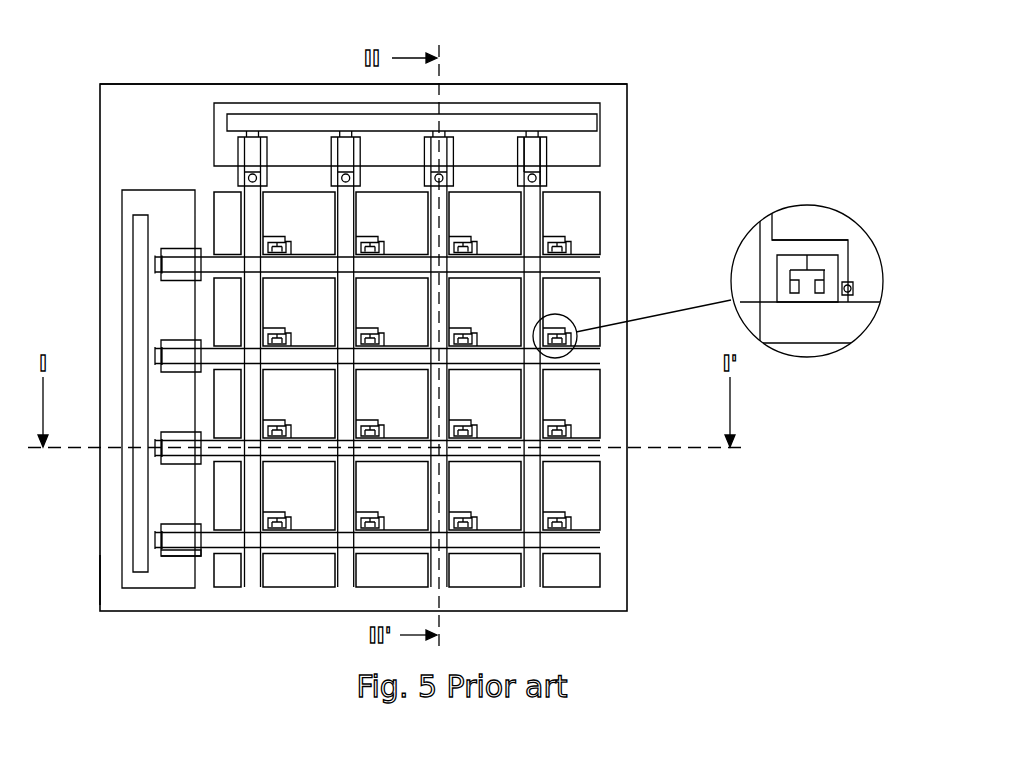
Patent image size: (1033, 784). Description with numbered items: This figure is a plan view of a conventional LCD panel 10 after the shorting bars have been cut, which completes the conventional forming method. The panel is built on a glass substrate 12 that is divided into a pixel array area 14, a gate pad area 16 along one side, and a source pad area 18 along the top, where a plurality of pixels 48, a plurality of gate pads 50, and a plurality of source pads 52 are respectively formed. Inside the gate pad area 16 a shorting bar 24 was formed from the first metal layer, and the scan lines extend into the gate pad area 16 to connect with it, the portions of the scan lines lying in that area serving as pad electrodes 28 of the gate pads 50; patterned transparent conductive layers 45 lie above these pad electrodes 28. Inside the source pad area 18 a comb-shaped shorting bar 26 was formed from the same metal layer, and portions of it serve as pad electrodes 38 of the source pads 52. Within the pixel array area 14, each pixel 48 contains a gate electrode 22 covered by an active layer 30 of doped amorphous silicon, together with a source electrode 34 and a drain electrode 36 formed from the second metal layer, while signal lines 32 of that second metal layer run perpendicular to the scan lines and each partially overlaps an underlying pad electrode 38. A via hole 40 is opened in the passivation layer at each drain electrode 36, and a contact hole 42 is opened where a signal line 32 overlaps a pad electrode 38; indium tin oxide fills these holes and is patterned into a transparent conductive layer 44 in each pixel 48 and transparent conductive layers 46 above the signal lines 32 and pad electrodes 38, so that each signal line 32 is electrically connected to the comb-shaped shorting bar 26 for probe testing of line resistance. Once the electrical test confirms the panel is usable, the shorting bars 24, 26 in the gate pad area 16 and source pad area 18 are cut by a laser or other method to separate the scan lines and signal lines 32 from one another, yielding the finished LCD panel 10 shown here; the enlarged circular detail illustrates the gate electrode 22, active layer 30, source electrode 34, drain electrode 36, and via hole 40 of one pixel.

The LCD panel 10 is at (548, 37).
The glass substrate 12 is at (630, 411).
The pixel array area 14 is at (600, 567).
The gate pad area 16 is at (107, 567).
The source pad area 18 is at (242, 104).
The gate electrode 22 is at (816, 254).
The shorting bar 24 is at (145, 390).
The comb-shaped shorting bar 26 is at (483, 116).
The pad electrode 28 is at (178, 538).
The active layer 30 is at (789, 250).
The signal line 32 is at (258, 577).
The source electrode 34 is at (790, 287).
The drain electrode 36 is at (838, 268).
The pad electrode 38 is at (528, 152).
The via hole 40 is at (853, 292).
The contact hole 42 is at (537, 178).
The patterned transparent conductive layer 44 is at (588, 489).
The patterned transparent conductive layer 45 is at (170, 556).
The patterned transparent conductive layer 46 is at (545, 143).
The pixel 48 is at (606, 223).
The gate pad 50 is at (170, 245).
The source pad 52 is at (328, 152).